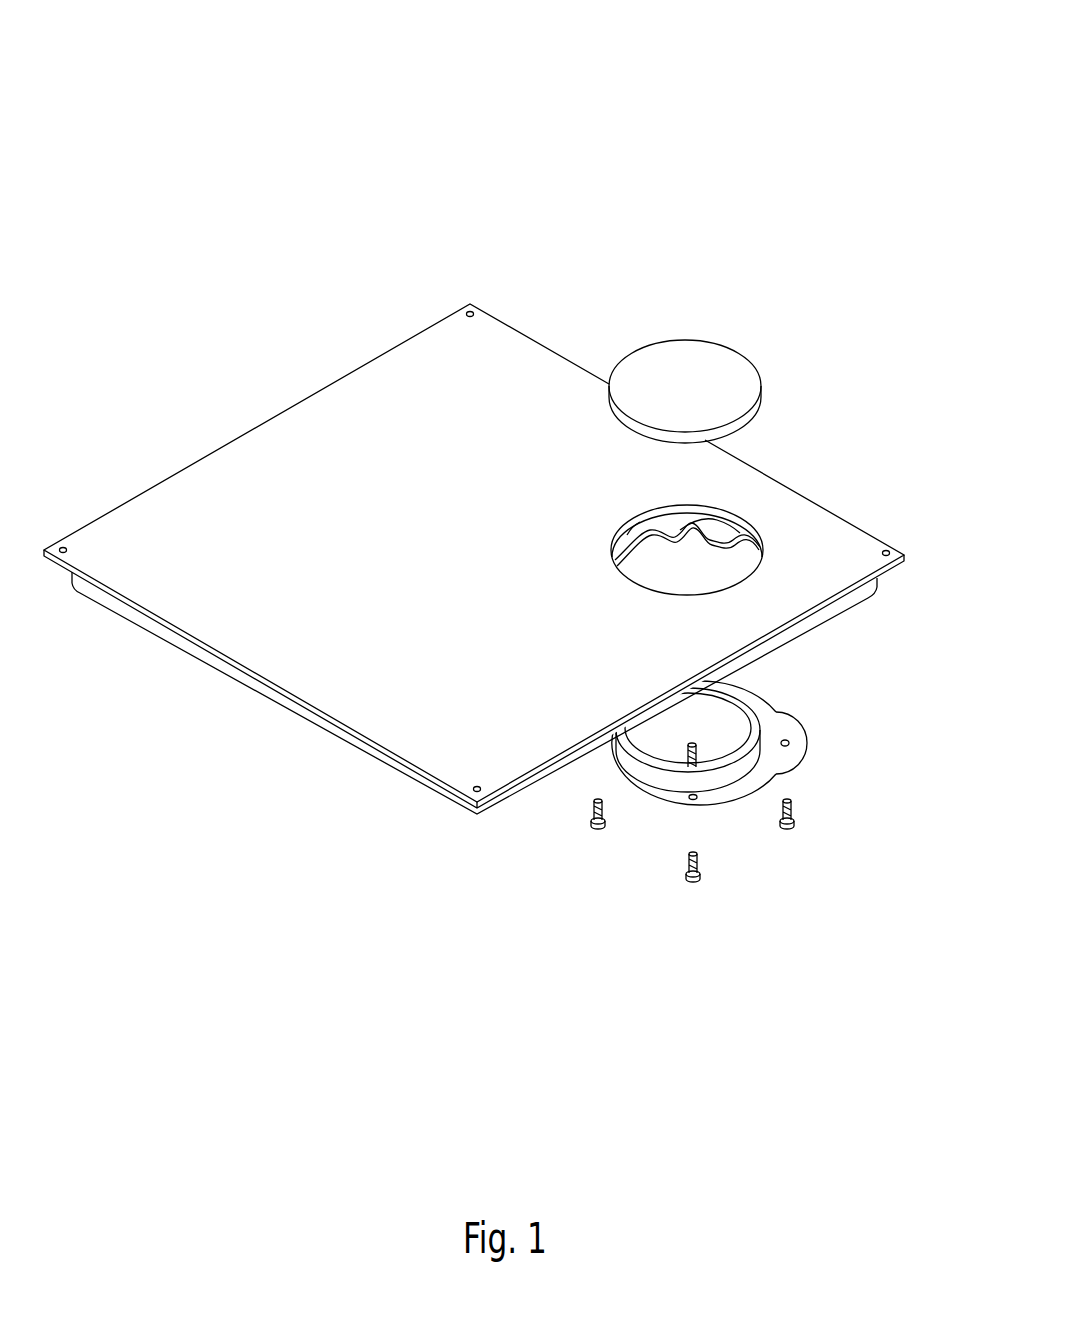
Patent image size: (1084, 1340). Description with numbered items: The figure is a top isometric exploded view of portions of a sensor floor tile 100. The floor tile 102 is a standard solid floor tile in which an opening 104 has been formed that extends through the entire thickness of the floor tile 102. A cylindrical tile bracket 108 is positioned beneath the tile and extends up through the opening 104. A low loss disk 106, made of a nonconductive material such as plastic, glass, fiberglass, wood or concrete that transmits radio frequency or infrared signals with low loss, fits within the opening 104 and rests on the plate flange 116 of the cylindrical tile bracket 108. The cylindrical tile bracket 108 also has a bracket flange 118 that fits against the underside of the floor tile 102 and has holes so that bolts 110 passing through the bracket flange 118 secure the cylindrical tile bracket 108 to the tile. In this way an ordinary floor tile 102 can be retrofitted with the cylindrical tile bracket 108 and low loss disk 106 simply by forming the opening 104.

The sensor floor tile 100 is at (647, 63).
The floor tile 102 is at (295, 405).
The opening 104 is at (617, 565).
The low loss disk 106 is at (823, 315).
The cylindrical tile bracket 108 is at (773, 710).
The bolts 110 is at (677, 898).
The plate flange 116 is at (658, 768).
The bracket flange 118 is at (787, 770).